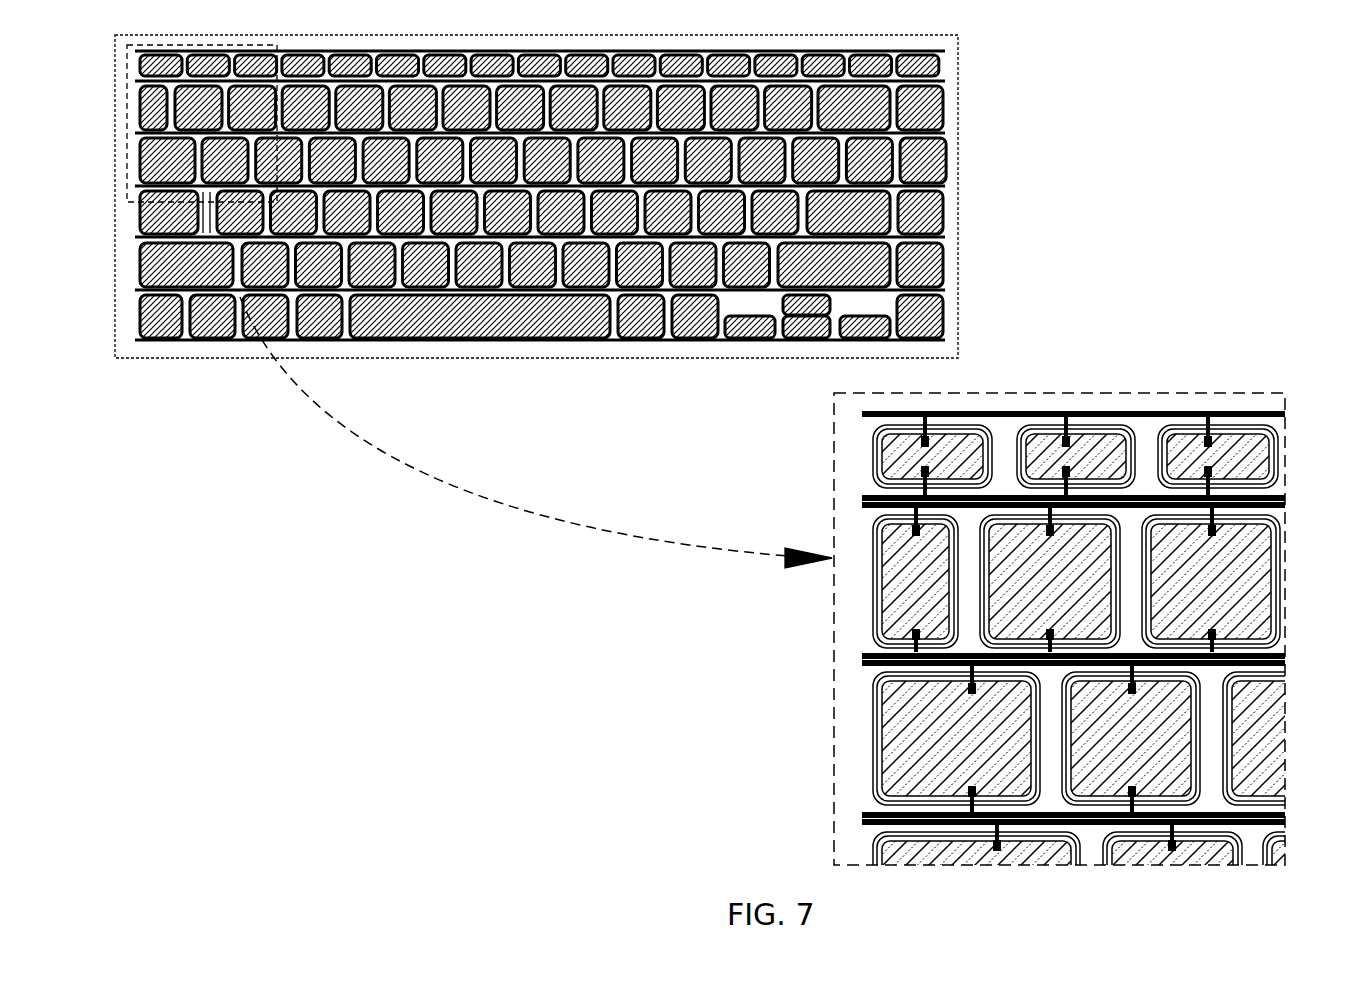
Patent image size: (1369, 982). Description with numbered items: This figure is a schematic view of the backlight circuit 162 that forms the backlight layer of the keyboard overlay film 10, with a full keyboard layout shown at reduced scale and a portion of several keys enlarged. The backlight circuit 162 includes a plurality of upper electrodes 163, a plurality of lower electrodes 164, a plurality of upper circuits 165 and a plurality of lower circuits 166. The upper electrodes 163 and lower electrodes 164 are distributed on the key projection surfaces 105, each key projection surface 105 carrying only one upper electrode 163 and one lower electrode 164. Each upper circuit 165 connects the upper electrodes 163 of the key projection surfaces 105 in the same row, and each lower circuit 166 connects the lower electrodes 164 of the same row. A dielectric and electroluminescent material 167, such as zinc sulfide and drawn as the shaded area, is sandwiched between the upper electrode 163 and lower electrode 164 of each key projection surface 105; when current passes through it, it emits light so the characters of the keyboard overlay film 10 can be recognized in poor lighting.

The keyboard overlay film 10 is at (570, 179).
The backlight circuit 162 is at (845, 52).
The key projection surface 105 is at (989, 446).
The upper electrode 163 is at (875, 528).
The lower electrode 164 is at (887, 790).
The upper circuit 165 is at (1235, 411).
The lower circuit 166 is at (1279, 493).
The dielectric and electroluminescent material 167 is at (1133, 758).